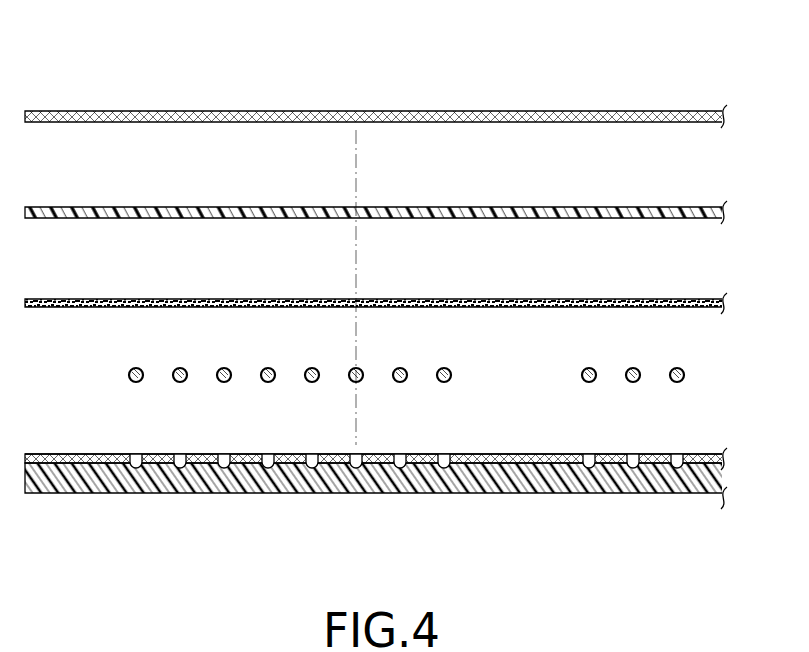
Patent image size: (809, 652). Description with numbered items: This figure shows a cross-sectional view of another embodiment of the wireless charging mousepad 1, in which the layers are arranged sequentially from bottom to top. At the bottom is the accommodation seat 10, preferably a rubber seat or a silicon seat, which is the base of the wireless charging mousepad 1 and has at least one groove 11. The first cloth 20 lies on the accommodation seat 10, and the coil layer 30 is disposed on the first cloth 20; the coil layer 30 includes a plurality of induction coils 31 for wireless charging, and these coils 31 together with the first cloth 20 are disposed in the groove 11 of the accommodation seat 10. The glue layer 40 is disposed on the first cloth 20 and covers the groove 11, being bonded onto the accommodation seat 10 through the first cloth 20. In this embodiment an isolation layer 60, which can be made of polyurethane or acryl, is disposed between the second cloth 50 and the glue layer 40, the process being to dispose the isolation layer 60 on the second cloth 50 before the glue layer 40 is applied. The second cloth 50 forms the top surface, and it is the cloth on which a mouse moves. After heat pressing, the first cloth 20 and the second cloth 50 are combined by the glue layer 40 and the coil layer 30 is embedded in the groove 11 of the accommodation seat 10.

The wireless charging mousepad 1 is at (146, 27).
The accommodation seat 10 is at (525, 482).
The groove 11 is at (589, 469).
The first cloth 20 is at (514, 454).
The coil layer 30 is at (456, 344).
The induction coil 31 is at (586, 368).
The glue layer 40 is at (614, 299).
The second cloth 50 is at (558, 111).
The isolation layer 60 is at (620, 207).